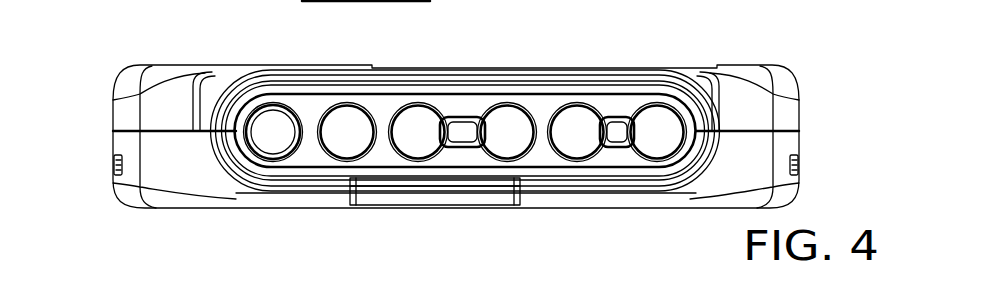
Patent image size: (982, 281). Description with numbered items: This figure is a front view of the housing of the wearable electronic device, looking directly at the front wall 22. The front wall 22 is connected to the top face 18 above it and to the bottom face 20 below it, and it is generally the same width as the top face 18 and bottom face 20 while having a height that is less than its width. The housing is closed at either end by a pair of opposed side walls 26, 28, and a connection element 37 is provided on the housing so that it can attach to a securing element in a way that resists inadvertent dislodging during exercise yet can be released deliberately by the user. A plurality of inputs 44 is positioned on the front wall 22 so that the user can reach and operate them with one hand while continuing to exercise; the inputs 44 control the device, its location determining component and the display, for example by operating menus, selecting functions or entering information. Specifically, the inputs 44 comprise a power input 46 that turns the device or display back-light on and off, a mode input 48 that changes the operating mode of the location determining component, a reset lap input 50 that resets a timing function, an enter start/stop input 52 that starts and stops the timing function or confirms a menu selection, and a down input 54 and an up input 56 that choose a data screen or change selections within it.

The top face 18 is at (718, 66).
The bottom face 20 is at (193, 208).
The front wall 22 is at (170, 116).
The side wall 26 is at (113, 144).
The side wall 28 is at (799, 141).
The connection element 37 is at (443, 200).
The inputs 44 is at (305, 97).
The power input 46 is at (273, 136).
The mode input 48 is at (347, 136).
The reset lap input 50 is at (418, 136).
The enter start/stop input 52 is at (507, 136).
The down input 54 is at (577, 136).
The up input 56 is at (657, 136).